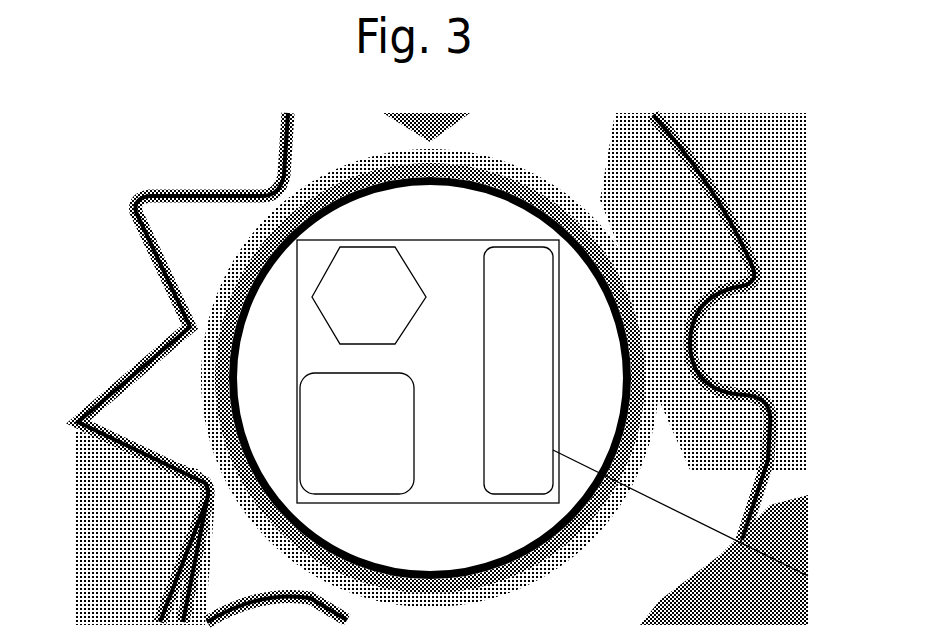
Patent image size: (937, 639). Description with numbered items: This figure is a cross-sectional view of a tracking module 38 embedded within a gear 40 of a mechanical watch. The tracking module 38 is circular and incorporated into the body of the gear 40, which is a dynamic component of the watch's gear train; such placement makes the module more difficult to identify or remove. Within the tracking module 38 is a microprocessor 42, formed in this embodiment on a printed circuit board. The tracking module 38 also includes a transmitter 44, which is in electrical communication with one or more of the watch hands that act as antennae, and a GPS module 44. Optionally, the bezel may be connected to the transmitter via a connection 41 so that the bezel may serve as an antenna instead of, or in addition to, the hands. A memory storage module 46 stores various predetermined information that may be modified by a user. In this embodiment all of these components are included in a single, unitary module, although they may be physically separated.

The tracking module 38 is at (268, 315).
The gear 40 is at (216, 218).
The connection 41 is at (707, 525).
The microprocessor 42 is at (440, 375).
The transmitter 44 is at (358, 315).
The memory storage module 46 is at (343, 452).